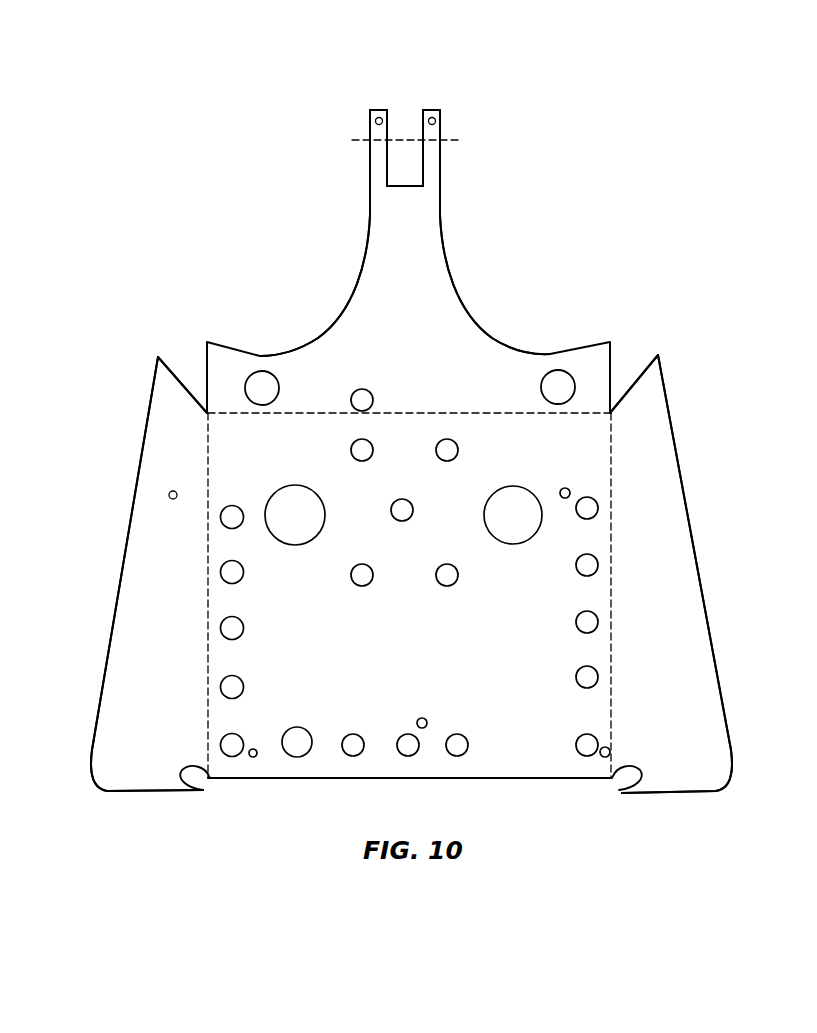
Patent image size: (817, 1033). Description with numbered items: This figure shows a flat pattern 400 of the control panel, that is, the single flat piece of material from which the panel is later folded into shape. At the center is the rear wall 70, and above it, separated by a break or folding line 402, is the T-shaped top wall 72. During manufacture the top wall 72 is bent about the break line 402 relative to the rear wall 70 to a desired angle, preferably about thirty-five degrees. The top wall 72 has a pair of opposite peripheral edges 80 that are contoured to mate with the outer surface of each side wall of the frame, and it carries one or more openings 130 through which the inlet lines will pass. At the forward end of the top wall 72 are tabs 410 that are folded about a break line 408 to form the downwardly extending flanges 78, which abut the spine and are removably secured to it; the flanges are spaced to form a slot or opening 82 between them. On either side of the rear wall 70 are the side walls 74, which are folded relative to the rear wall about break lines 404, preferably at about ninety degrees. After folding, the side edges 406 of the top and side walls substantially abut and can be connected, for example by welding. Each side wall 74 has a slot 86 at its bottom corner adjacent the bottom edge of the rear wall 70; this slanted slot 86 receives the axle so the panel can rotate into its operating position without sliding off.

The flat pattern 400 is at (183, 155).
The slot 82 is at (406, 104).
The downwardly extending flanges 78 is at (378, 110).
The break line 408 is at (460, 140).
The tabs 410 is at (387, 170).
The top wall 72 is at (387, 275).
The peripheral edges 80 is at (447, 235).
The break line 402 is at (408, 413).
The openings 130 is at (258, 371).
The side edges 406 is at (172, 363).
The break lines 404 is at (207, 542).
The side walls 74 is at (123, 672).
The rear wall 70 is at (540, 647).
The slot 86 is at (203, 790).